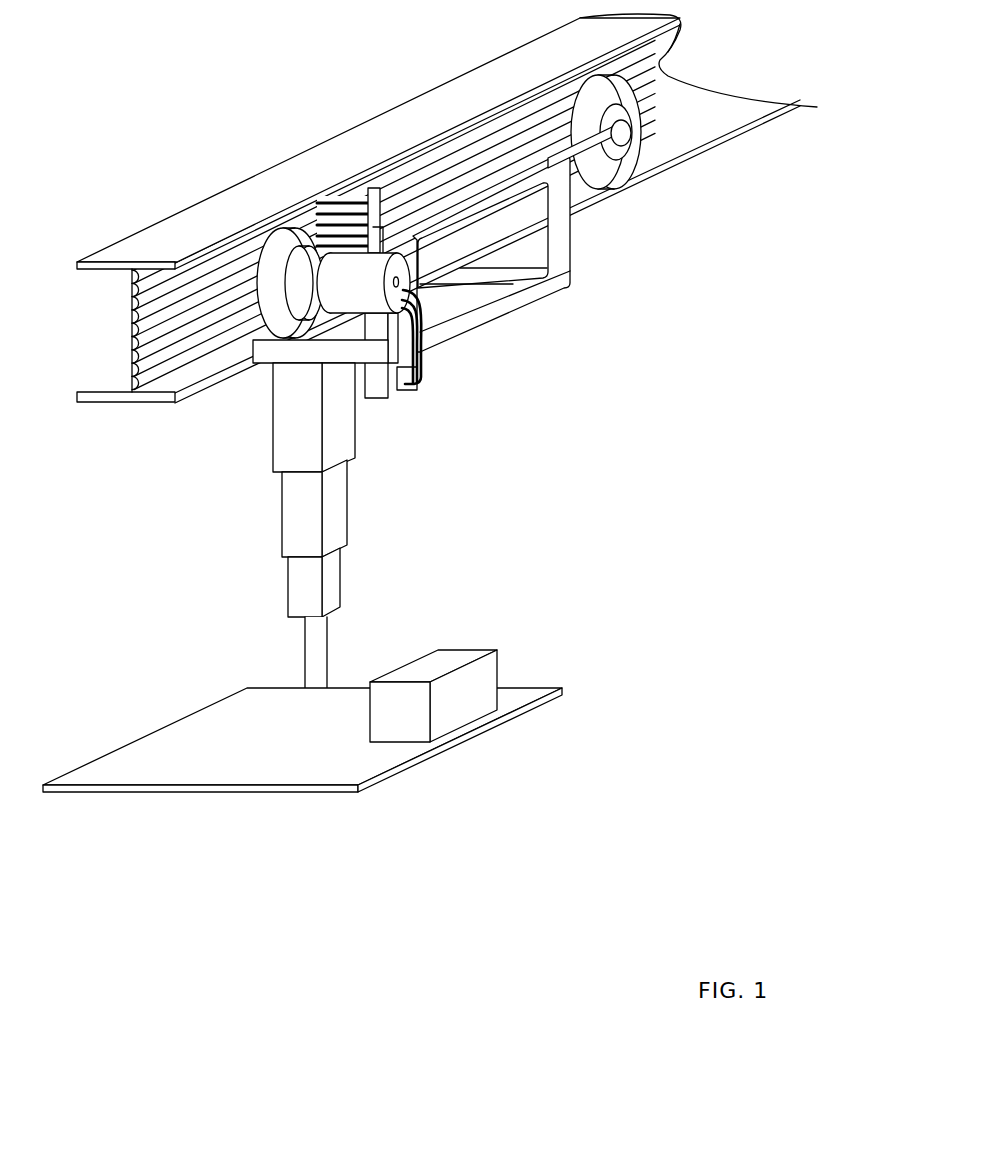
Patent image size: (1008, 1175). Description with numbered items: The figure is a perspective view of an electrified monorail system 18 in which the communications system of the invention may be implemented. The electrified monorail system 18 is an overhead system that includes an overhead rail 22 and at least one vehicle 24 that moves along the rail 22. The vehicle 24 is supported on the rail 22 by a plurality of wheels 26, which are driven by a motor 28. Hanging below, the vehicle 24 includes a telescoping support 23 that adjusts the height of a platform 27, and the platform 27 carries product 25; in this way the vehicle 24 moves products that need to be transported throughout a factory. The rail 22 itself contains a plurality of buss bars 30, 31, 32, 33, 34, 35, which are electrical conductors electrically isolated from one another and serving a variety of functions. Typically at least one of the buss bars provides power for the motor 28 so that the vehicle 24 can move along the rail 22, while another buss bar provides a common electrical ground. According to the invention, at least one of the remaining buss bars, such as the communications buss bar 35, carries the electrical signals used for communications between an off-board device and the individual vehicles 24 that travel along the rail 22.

The electrified monorail system 18 is at (204, 80).
The overhead rail 22 is at (178, 225).
The telescoping support 23 is at (345, 512).
The vehicle 24 is at (512, 394).
The product 25 is at (457, 657).
The wheels 26 is at (275, 235).
The platform 27 is at (258, 790).
The motor 28 is at (350, 295).
The buss bar 30 is at (132, 277).
The buss bar 31 is at (132, 290).
The buss bar 32 is at (132, 303).
The buss bar 33 is at (132, 316).
The tube 34 is at (132, 330).
The communications buss bar 35 is at (132, 343).